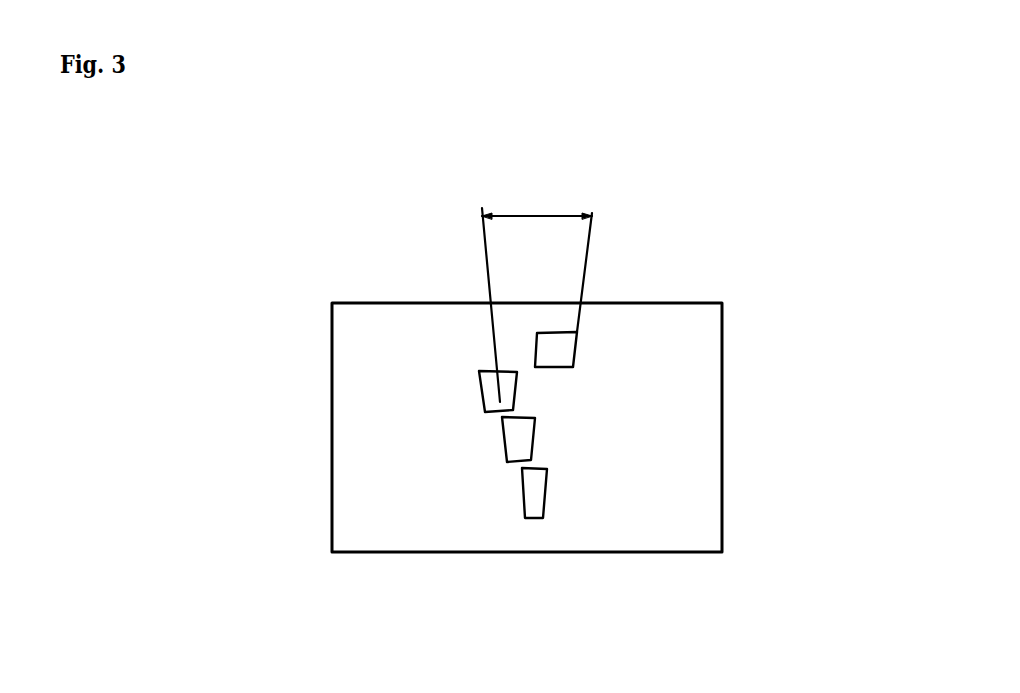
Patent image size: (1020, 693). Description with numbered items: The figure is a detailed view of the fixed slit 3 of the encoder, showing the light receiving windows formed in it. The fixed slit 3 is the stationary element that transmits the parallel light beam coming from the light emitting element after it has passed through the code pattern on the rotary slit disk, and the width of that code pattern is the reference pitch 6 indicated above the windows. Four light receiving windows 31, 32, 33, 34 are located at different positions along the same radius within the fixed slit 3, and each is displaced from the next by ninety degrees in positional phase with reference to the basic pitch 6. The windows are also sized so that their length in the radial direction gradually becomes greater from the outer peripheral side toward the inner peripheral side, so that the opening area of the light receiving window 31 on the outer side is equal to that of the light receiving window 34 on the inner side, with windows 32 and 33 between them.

The fixed slit 3 is at (678, 523).
The reference pitch 6 is at (535, 216).
The light receiving window 31 is at (547, 350).
The light receiving window 32 is at (488, 386).
The light receiving window 33 is at (522, 431).
The light receiving window 34 is at (533, 498).